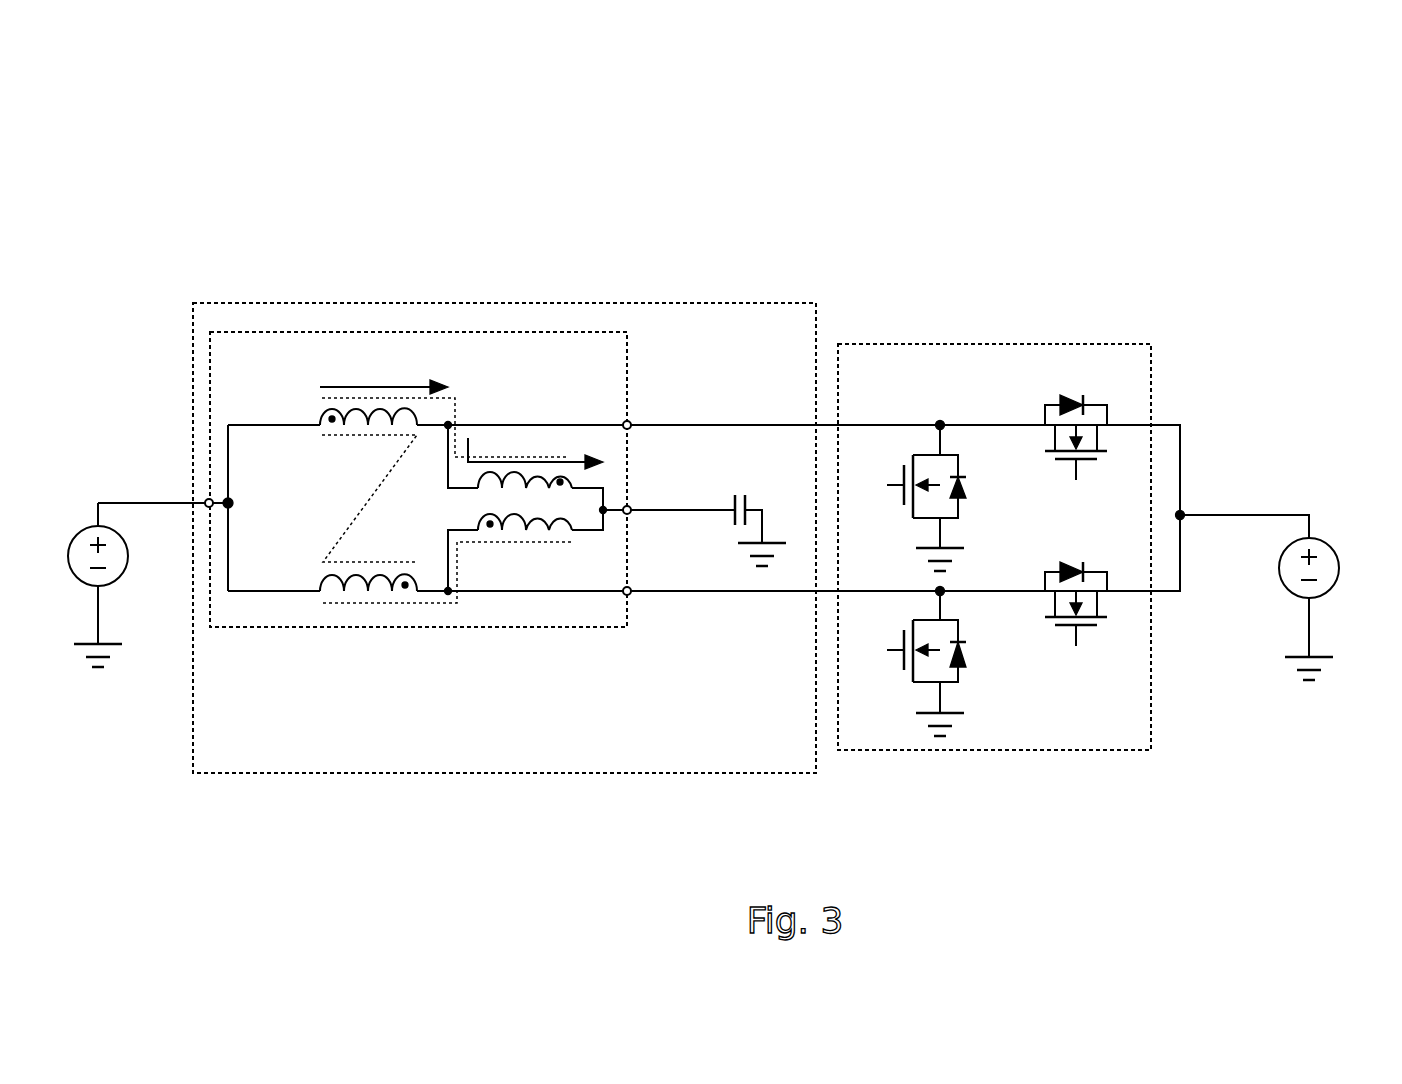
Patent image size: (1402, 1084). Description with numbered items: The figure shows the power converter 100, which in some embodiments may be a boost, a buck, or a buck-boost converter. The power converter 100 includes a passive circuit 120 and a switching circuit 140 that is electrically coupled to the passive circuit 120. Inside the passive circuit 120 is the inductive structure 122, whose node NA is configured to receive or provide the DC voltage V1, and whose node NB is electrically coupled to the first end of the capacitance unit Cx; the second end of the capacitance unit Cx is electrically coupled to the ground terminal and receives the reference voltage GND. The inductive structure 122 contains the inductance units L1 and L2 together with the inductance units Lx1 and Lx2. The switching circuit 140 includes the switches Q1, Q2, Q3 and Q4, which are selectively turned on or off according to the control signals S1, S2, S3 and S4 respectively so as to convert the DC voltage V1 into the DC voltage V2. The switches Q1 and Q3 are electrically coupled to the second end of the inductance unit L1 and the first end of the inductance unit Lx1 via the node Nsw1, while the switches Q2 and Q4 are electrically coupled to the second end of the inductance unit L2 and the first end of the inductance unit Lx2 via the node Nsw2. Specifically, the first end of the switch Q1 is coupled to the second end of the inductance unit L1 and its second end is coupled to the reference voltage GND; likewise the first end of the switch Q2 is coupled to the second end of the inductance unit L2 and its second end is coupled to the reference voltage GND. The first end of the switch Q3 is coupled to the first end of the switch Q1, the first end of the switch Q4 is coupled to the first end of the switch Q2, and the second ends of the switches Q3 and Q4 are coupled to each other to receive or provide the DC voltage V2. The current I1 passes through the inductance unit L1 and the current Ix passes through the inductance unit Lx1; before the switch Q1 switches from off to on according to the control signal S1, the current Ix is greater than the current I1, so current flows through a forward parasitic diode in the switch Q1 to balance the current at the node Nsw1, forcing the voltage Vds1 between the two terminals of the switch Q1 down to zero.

The power converter 100 is at (103, 81).
The passive circuit 120 is at (680, 302).
The inductive structure 122 is at (385, 627).
The switching circuit 140 is at (990, 344).
The DC voltage V1 is at (72, 585).
The DC voltage V2 is at (1282, 597).
The inductance unit L1 is at (308, 428).
The inductance unit L2 is at (310, 590).
The inductance unit Lx1 is at (467, 487).
The inductance unit Lx2 is at (468, 532).
The capacitance unit Cx is at (747, 503).
The switch Q1 is at (926, 498).
The switch Q2 is at (926, 663).
The switch Q3 is at (1090, 427).
The switch Q4 is at (1092, 593).
The control signal S1 is at (865, 487).
The control signal S2 is at (865, 652).
The control signal S3 is at (1075, 500).
The control signal S4 is at (1075, 665).
The node NA is at (209, 503).
The node NB is at (627, 510).
The node Nsw1 is at (627, 425).
The node Nsw2 is at (627, 591).
The current I1 is at (384, 373).
The current Ix is at (535, 447).
The voltage Vds1 is at (1002, 497).
The reference voltage GND is at (707, 568).